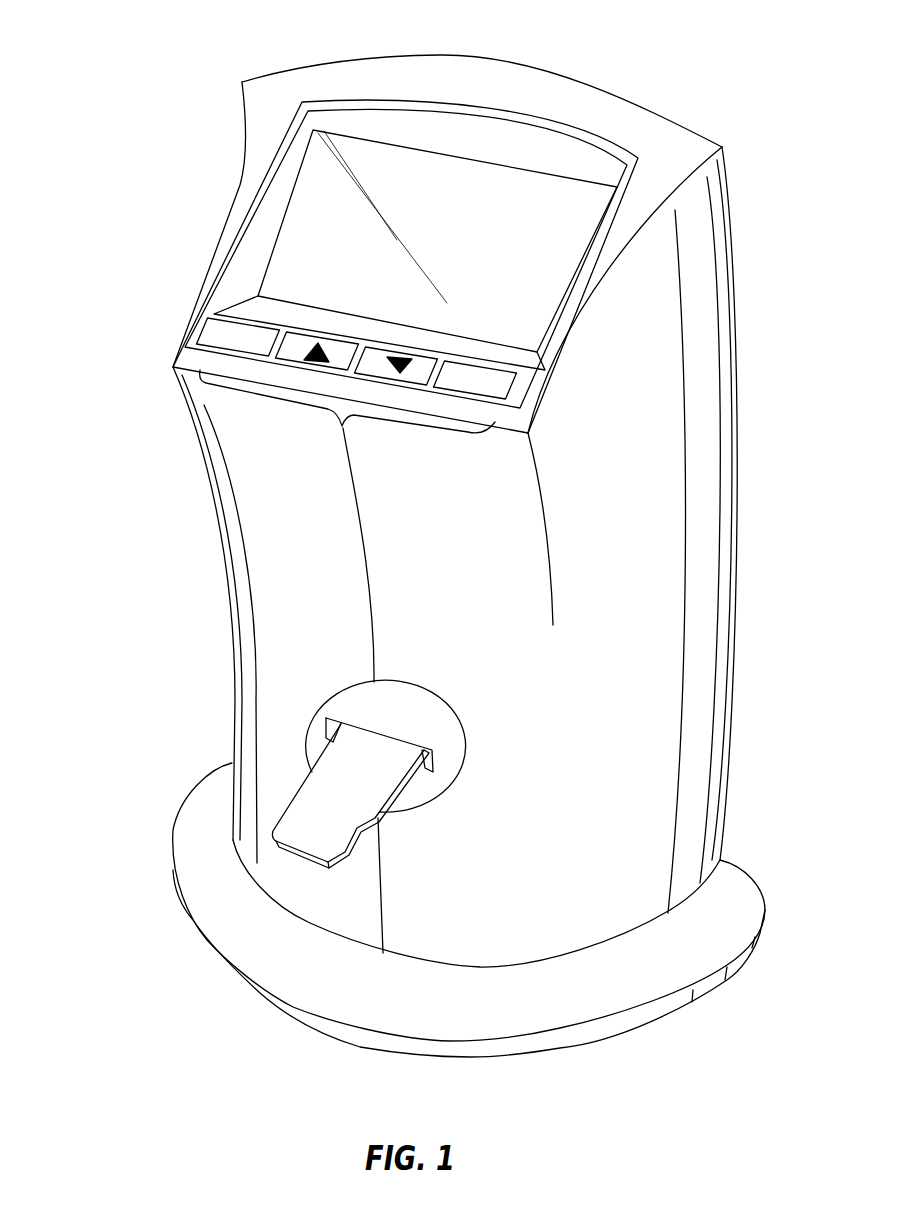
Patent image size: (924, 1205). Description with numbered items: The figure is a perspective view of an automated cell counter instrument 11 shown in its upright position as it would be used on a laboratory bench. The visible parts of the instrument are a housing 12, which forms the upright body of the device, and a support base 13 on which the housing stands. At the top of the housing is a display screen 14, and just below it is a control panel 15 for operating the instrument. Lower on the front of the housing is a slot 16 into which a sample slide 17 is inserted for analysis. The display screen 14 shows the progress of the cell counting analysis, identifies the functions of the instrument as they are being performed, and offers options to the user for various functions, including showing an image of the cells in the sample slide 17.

The automated cell counter instrument 11 is at (118, 68).
The housing 12 is at (733, 343).
The support base 13 is at (747, 873).
The display screen 14 is at (318, 200).
The control panel 15 is at (344, 436).
The slot 16 is at (435, 758).
The sample slide 17 is at (350, 848).